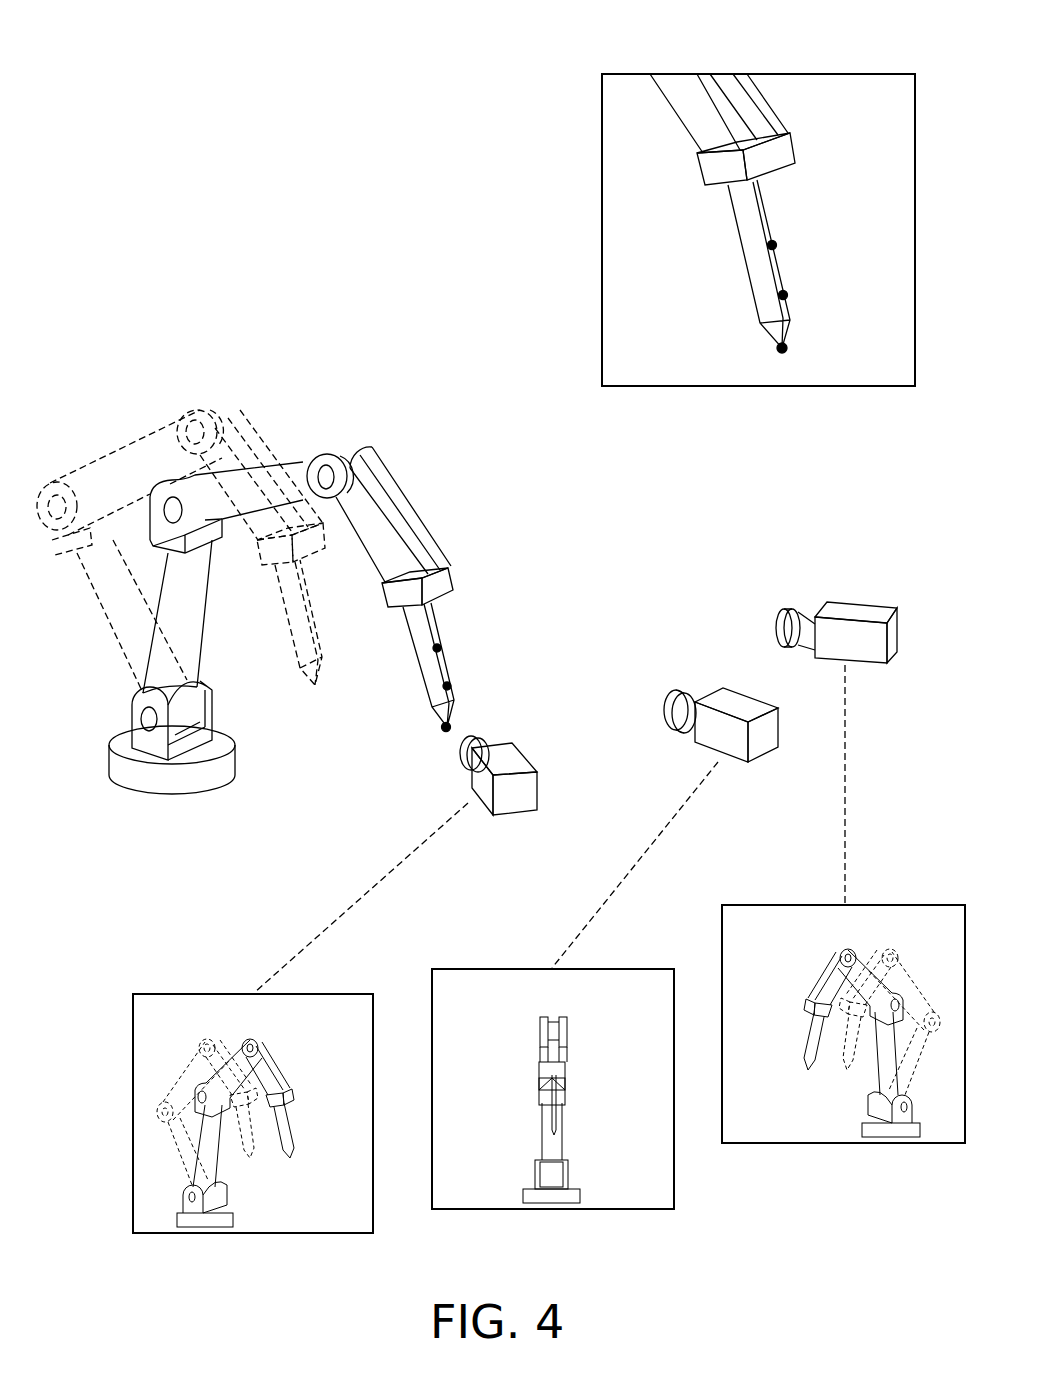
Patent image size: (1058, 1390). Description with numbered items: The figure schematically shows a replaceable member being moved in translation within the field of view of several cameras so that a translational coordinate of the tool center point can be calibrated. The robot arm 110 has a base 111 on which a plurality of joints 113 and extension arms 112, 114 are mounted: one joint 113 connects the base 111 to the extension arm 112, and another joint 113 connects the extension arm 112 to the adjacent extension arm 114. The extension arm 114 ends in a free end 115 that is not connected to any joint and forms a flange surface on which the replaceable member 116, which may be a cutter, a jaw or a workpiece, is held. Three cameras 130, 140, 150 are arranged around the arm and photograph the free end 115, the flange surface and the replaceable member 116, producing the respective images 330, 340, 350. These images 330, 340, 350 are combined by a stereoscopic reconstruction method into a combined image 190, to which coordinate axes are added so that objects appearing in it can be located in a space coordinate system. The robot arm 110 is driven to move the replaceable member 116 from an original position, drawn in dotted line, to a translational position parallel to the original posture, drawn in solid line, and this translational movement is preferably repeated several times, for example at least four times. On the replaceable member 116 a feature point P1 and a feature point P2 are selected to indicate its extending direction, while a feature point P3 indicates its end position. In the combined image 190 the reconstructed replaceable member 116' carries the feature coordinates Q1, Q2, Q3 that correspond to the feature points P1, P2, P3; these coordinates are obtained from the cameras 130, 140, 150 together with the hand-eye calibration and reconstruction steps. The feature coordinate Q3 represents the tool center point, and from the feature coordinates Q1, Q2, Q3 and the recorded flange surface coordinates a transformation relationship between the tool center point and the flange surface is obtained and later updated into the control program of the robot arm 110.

The robot arm 110 is at (112, 398).
The base 111 is at (140, 778).
The extension arm 112 is at (200, 598).
The joint 113 is at (318, 458).
The extension arm 114 is at (395, 497).
The free end 115 is at (447, 583).
The replaceable member 116 is at (394, 665).
The replaceable member in combined image 116' is at (722, 211).
The camera 130 is at (505, 760).
The camera 140 is at (730, 700).
The camera 150 is at (857, 605).
The combined image 190 is at (818, 74).
The image 330 is at (181, 994).
The image 340 is at (472, 969).
The image 350 is at (912, 905).
The feature point P1 is at (456, 647).
The feature point P2 is at (465, 689).
The feature point P3 is at (432, 739).
The feature coordinate Q1 is at (795, 242).
The feature coordinate Q2 is at (802, 294).
The feature coordinate Q3 is at (802, 356).